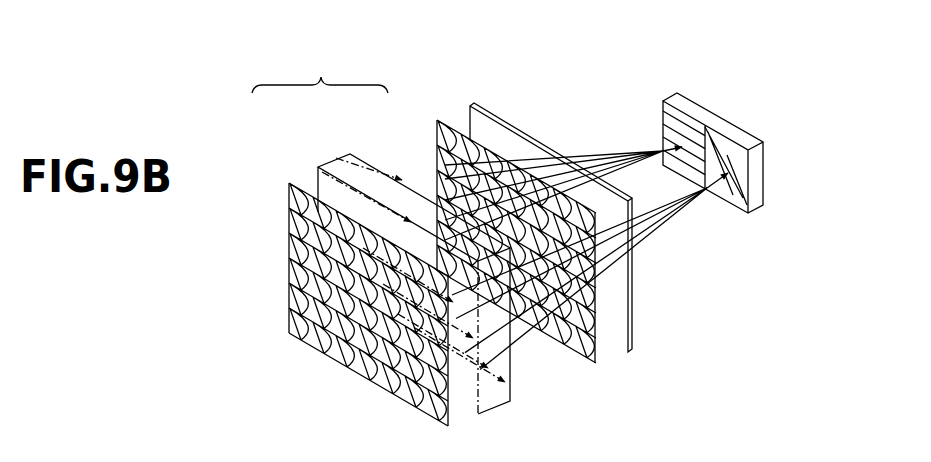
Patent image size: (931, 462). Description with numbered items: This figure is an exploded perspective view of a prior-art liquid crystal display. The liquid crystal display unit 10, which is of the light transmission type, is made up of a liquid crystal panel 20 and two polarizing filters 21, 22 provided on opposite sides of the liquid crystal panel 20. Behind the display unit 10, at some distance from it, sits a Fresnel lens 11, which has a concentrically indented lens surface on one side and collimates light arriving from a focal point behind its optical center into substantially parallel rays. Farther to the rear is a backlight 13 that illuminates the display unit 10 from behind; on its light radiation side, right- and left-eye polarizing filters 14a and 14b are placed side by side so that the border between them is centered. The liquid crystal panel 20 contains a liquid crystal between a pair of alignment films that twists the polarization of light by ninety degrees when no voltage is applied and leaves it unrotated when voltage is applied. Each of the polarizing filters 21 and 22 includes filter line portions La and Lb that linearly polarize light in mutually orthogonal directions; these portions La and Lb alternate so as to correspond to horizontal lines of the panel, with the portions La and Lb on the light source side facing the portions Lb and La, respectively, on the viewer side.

The liquid crystal display unit 10 is at (320, 70).
The polarizing filter 22 is at (294, 176).
The liquid crystal panel 20 is at (333, 155).
The polarizing filter 21 is at (422, 123).
The Fresnel lens 11 is at (485, 110).
The backlight 13 is at (733, 126).
The right-eye polarizing filter 14a is at (665, 129).
The left-eye polarizing filter 14b is at (724, 192).
The filter line portion La is at (437, 207).
The filter line portion Lb is at (289, 268).